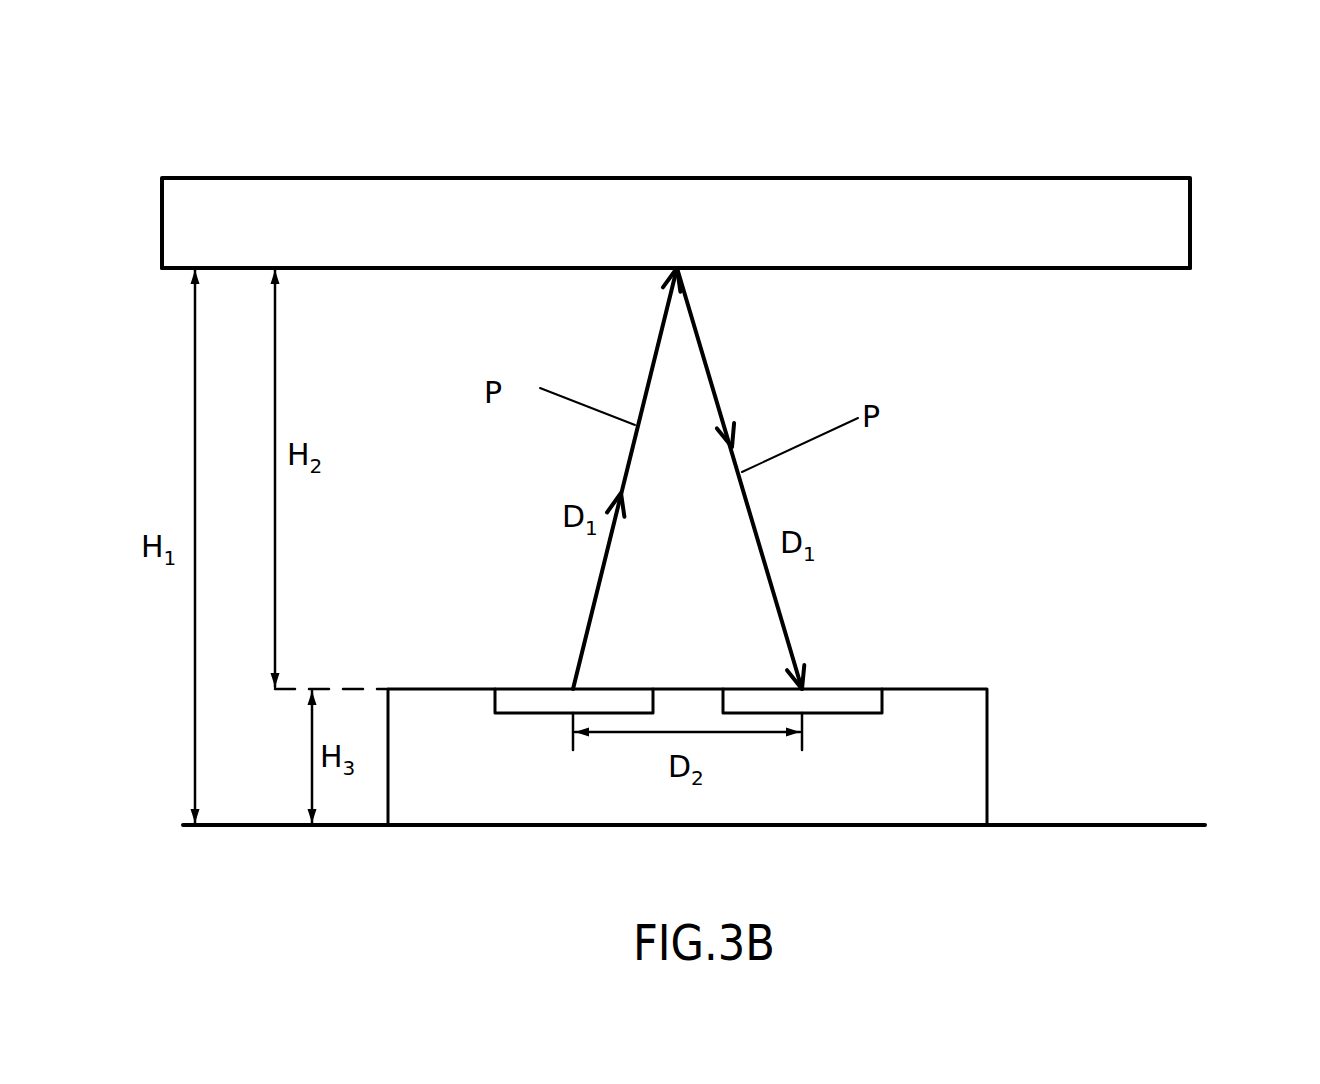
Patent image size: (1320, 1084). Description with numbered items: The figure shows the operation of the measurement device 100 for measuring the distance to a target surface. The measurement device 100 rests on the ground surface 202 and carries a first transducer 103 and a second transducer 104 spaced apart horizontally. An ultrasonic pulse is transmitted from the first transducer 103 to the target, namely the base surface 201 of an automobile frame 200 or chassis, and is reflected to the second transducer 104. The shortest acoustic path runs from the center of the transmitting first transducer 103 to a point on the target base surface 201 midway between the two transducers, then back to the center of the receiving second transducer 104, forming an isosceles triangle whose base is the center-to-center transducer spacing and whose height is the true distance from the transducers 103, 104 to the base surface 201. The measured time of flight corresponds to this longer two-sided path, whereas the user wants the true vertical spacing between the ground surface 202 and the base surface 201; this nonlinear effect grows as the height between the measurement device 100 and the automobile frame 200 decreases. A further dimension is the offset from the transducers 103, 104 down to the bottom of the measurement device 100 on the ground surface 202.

The automobile frame 200 is at (958, 178).
The base surface 201 is at (1150, 268).
The measurement device 100 is at (987, 708).
The first transducer 103 is at (507, 689).
The second transducer 104 is at (862, 689).
The ground surface 202 is at (1035, 825).